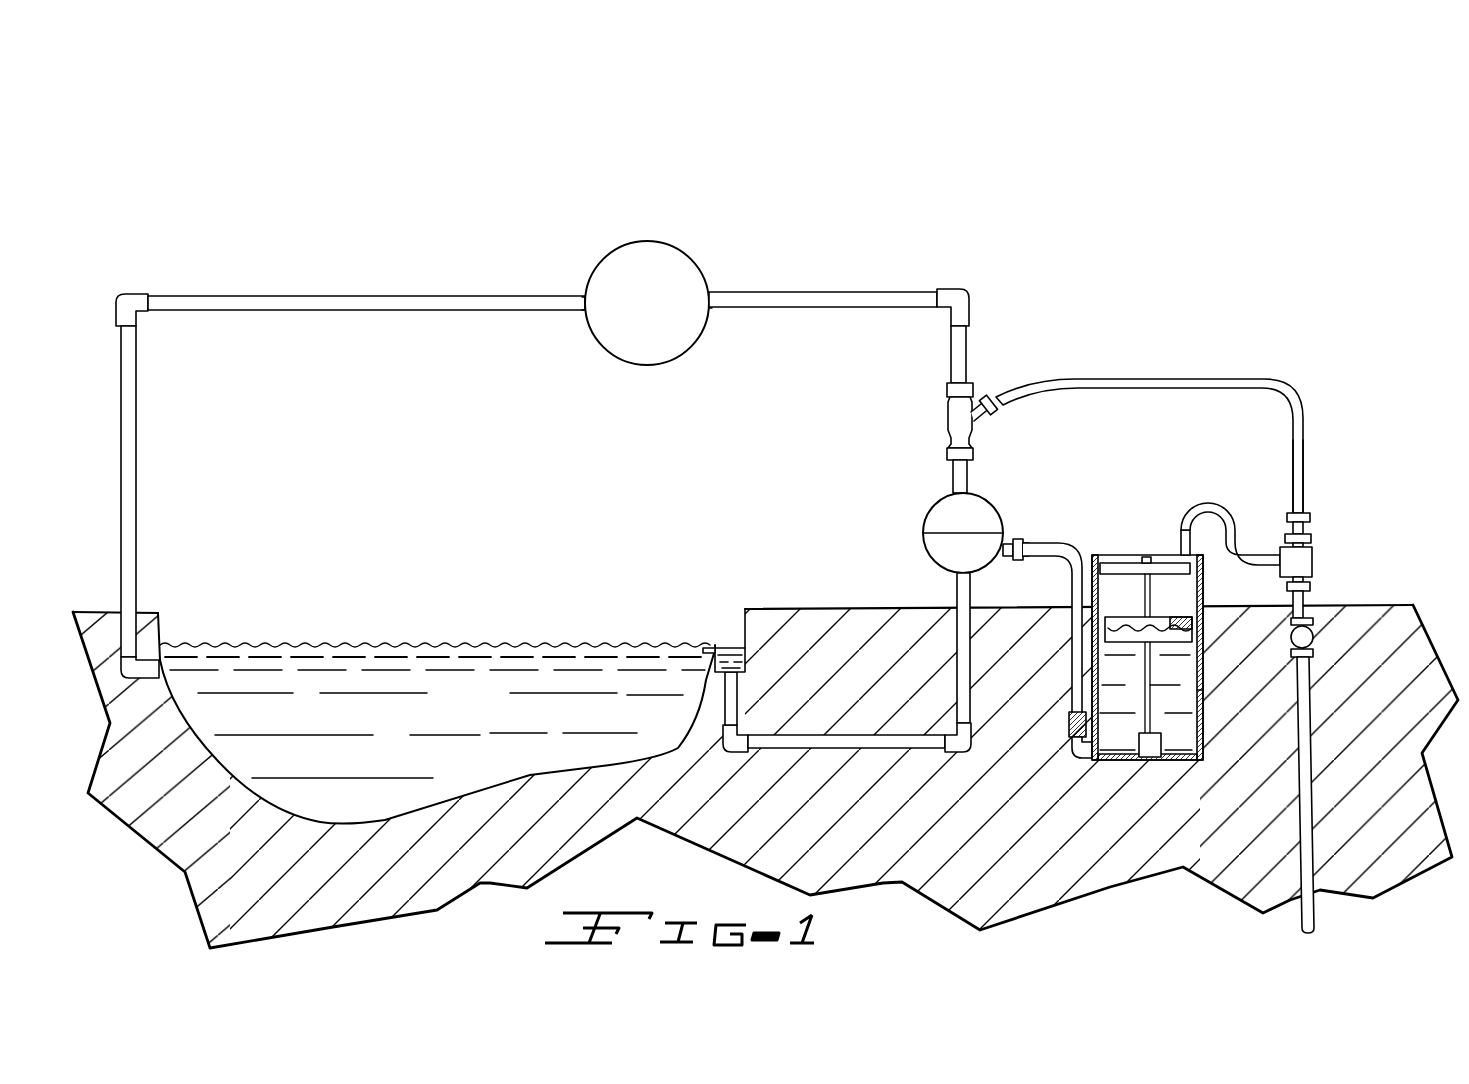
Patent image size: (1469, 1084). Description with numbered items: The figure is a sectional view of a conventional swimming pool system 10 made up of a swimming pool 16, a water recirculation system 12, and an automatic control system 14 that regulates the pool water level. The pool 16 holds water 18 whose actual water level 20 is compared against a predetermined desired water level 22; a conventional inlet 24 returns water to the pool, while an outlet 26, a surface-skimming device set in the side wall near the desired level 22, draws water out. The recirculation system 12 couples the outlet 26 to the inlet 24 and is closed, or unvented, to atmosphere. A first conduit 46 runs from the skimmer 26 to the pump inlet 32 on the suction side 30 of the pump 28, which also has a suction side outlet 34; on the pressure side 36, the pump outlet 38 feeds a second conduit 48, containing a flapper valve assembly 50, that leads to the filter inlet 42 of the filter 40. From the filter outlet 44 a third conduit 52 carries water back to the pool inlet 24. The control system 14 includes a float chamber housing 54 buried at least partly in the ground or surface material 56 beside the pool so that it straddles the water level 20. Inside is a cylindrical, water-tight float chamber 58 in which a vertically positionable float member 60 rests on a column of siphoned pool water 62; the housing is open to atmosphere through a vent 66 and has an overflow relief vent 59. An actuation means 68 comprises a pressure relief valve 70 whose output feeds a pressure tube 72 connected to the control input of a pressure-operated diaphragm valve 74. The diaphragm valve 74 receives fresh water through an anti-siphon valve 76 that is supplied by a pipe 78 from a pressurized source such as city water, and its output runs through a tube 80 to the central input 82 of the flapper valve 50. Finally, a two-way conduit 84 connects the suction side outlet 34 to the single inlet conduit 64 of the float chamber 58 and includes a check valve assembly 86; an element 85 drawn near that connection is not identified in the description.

The swimming pool system 10 is at (462, 241).
The water recirculation system 12 is at (843, 288).
The automatic control system 14 is at (1172, 368).
The swimming pool 16 is at (285, 640).
The water 18 is at (450, 712).
The swimming pool water level 20 is at (450, 643).
The predetermined desired water level 22 is at (530, 655).
The swimming pool inlet 24 is at (165, 675).
The swimming pool outlet 26 is at (722, 640).
The swimming pool water pump 28 is at (980, 492).
The suction side 30 is at (935, 541).
The pump inlet 32 is at (952, 572).
The suction side outlet 34 is at (1010, 540).
The pressure side 36 is at (940, 516).
The pump outlet 38 is at (950, 505).
The filter 40 is at (645, 242).
The filter inlet 42 is at (713, 292).
The filter outlet 44 is at (585, 297).
The first conduit 46 is at (840, 748).
The second conduit 48 is at (808, 312).
The flapper valve assembly 50 is at (938, 430).
The third conduit 52 is at (330, 312).
The float chamber housing 54 is at (1210, 667).
The surface material 56 is at (941, 832).
The float chamber 58 is at (1196, 688).
The overflow relief vent 59 is at (1205, 600).
The float member 60 is at (1107, 618).
The siphoned pool water 62 is at (1115, 704).
The float chamber inlet 64 is at (1090, 760).
The atmospheric vent 66 is at (1131, 553).
The actuation means 68 is at (1165, 555).
The pressure relief valve 70 is at (1189, 522).
The pressure tube 72 is at (1228, 522).
The pressure-operated diaphragm valve 74 is at (1315, 545).
The anti-siphon valve 76 is at (1312, 628).
The fresh water conduit 78 is at (1318, 750).
The fresh water tube 80 is at (1090, 378).
The central input 82 is at (985, 405).
The two-way conduit 84 is at (1050, 546).
The connector fitting 85 is at (1032, 548).
The check valve assembly 86 is at (1068, 725).